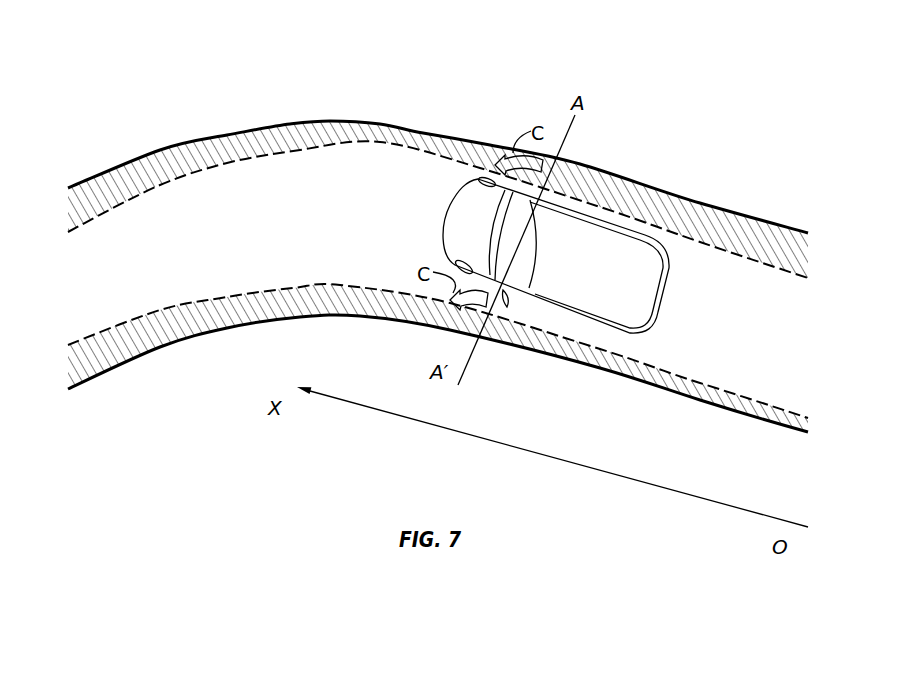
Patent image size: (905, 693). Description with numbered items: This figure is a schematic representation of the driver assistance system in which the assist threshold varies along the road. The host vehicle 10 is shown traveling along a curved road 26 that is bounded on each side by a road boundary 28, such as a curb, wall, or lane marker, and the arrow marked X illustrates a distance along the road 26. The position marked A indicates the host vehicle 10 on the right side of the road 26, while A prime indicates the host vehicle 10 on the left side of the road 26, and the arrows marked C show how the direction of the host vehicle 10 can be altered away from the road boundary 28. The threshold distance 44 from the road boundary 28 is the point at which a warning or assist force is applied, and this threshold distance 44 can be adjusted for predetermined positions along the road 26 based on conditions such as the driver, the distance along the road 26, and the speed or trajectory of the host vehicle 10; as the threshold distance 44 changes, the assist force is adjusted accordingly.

The host vehicle 10 is at (428, 174).
The road 26 is at (355, 159).
The road boundary 28 is at (318, 122).
The threshold distance 44 is at (692, 212).